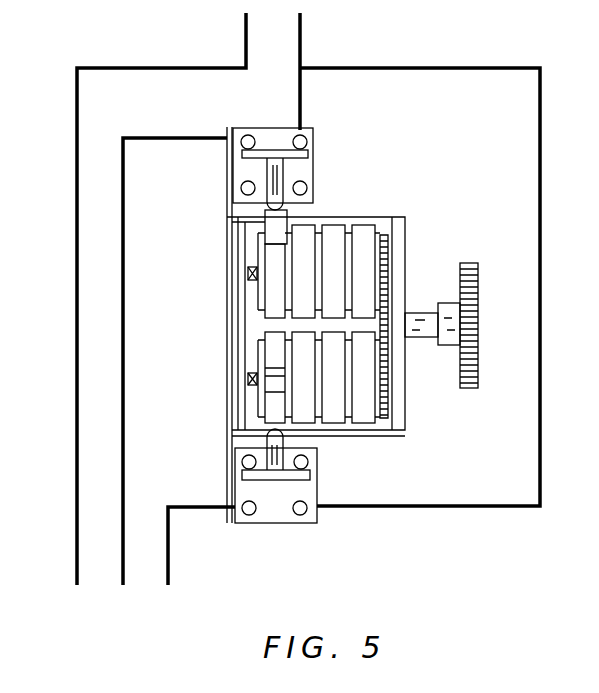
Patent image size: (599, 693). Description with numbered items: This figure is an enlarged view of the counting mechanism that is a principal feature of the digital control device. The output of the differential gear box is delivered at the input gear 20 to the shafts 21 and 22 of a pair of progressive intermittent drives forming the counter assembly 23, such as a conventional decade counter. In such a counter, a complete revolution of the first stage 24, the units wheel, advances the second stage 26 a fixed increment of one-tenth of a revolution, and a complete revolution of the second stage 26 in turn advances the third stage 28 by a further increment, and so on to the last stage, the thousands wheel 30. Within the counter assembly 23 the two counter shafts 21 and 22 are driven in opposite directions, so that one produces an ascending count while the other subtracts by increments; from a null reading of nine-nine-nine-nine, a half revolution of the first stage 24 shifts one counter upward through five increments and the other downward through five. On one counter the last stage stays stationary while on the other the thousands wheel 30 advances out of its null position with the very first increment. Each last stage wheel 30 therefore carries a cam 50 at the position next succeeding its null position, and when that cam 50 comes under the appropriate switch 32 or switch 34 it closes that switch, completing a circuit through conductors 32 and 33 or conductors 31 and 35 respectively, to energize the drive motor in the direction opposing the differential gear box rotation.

The input gear 20 is at (467, 263).
The counter shaft 21 is at (390, 238).
The counter shaft 22 is at (387, 401).
The counter assembly 23 is at (203, 333).
The first stage units wheel 24 is at (387, 219).
The second stage 26 is at (333, 226).
The third stage 28 is at (303, 423).
The thousands wheel 30 is at (270, 256).
The conductor 31 is at (77, 212).
The switch 32 is at (315, 160).
The conductor 33 is at (189, 140).
The switch 34 is at (318, 480).
The conductor 35 is at (397, 507).
The cam 50 is at (262, 213).